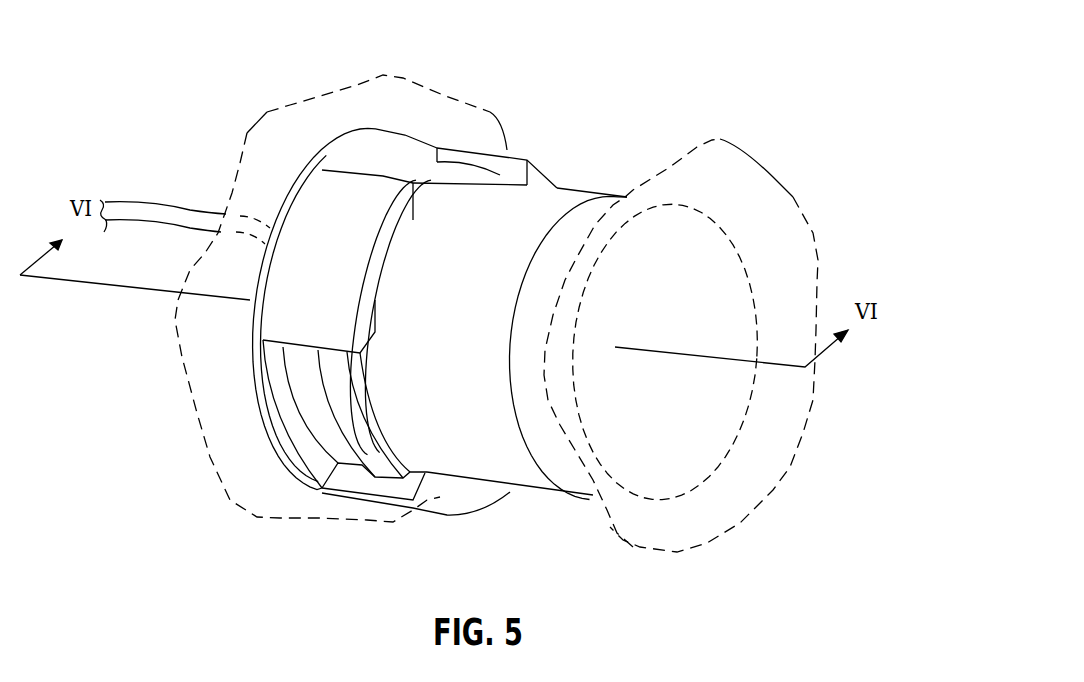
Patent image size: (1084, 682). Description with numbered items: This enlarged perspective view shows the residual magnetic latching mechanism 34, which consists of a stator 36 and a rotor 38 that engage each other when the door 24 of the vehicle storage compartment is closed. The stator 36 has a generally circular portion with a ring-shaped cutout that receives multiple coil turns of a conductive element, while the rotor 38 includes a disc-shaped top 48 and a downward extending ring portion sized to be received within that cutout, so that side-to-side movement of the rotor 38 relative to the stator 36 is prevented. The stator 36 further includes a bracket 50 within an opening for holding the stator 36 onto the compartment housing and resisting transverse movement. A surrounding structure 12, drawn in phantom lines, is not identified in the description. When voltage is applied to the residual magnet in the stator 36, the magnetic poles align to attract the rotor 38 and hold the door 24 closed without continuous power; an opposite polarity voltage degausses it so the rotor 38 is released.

The housing 12 is at (250, 130).
The door 24 is at (767, 165).
The latching mechanism 34 is at (623, 62).
The stator 36 is at (517, 170).
The rotor 38 is at (574, 202).
The disc-shaped top 48 is at (568, 472).
The bracket 50 is at (353, 425).